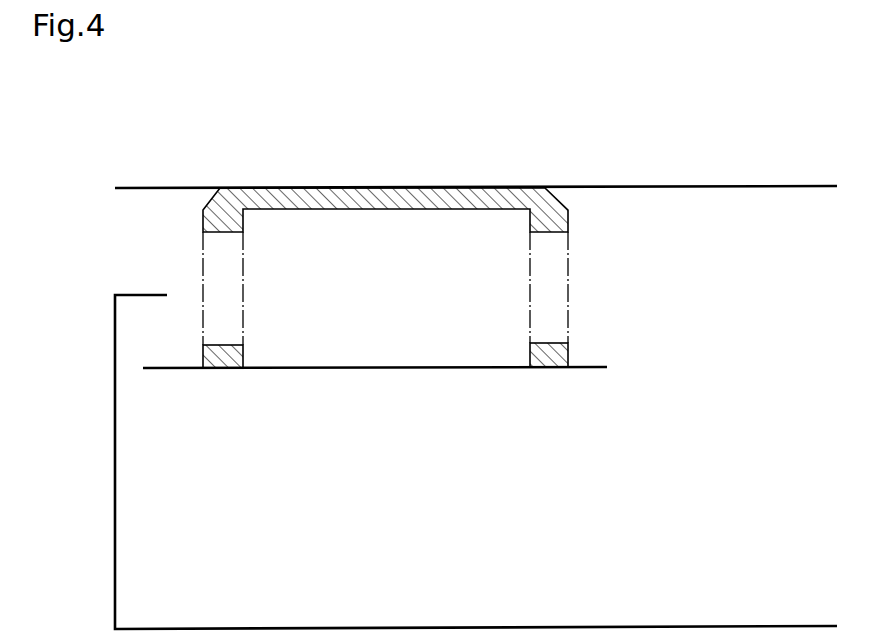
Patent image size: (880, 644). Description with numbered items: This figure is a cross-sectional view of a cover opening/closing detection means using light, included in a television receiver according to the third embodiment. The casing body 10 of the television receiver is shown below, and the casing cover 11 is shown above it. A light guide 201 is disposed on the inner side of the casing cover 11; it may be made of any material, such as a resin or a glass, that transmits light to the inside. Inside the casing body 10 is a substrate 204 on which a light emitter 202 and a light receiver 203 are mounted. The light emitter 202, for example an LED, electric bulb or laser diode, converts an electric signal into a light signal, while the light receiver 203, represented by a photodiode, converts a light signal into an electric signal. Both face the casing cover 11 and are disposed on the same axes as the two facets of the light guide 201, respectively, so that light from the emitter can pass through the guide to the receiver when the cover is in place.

The casing body 10 is at (225, 628).
The casing cover 11 is at (162, 187).
The light guide 201 is at (568, 221).
The light emitter 202 is at (243, 352).
The light receiver 203 is at (568, 352).
The substrate 204 is at (437, 368).